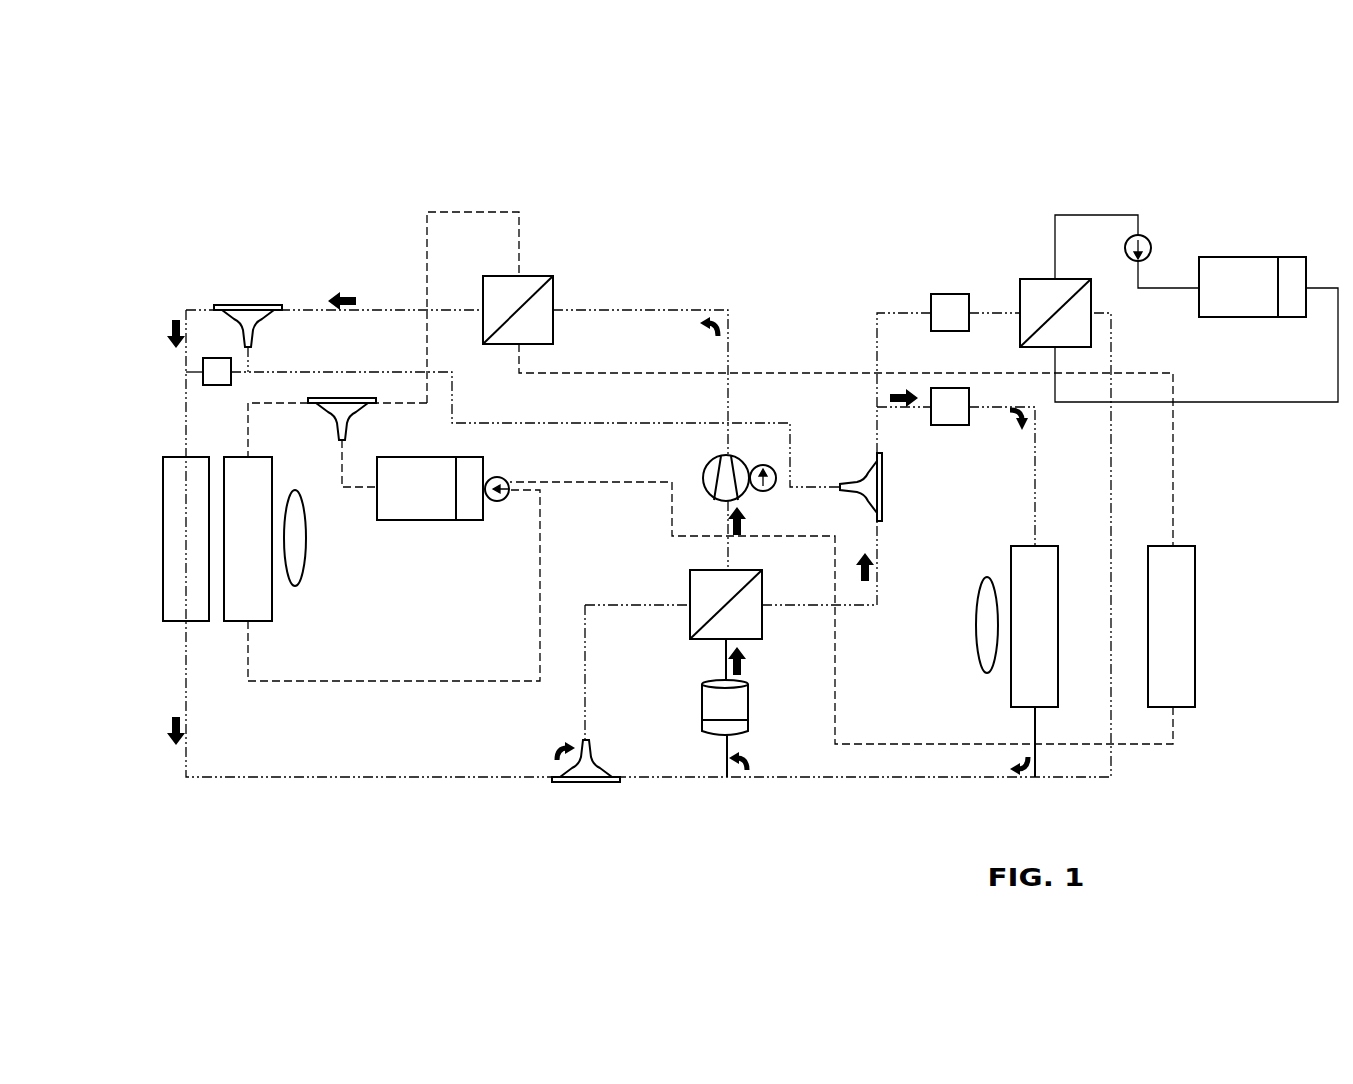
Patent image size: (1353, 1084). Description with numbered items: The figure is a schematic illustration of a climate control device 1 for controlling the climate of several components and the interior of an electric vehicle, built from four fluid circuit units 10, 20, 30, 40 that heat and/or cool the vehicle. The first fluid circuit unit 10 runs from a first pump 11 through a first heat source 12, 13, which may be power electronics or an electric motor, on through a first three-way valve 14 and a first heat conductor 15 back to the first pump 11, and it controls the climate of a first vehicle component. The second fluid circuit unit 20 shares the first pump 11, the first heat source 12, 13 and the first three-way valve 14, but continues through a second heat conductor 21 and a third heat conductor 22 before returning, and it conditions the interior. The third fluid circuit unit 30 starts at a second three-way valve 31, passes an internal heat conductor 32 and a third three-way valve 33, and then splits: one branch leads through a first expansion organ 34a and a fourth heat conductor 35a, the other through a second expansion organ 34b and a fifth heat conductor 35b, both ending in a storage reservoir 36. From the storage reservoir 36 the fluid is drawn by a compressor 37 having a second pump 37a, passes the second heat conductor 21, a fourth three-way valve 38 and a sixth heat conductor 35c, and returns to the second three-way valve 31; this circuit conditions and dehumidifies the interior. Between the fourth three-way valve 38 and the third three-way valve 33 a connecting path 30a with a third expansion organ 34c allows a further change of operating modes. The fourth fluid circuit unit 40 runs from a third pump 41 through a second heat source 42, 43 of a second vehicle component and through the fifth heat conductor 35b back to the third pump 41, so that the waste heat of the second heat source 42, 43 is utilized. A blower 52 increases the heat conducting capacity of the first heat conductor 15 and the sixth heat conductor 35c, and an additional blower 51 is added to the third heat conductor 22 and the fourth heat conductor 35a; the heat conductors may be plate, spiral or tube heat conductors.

The climate control device 1 is at (345, 190).
The first fluid circuit unit 10 is at (390, 681).
The first pump 11 is at (505, 503).
The first heat source 12 is at (468, 520).
The first heat source 13 is at (410, 520).
The first three-way valve 14 is at (342, 403).
The first heat conductor 15 is at (272, 600).
The second fluid circuit unit 20 is at (800, 372).
The second heat conductor 21 is at (540, 276).
The third heat conductor 22 is at (1195, 625).
The third fluid circuit unit 30 is at (437, 777).
The connecting path 30a is at (555, 425).
The second three-way valve 31 is at (587, 780).
The internal heat conductor 32 is at (690, 585).
The third three-way valve 33 is at (862, 460).
The first expansion organ 34a is at (950, 425).
The second expansion organ 34b is at (950, 294).
The third expansion organ 34c is at (213, 385).
The fourth heat conductor 35a is at (1011, 680).
The fifth heat conductor 35b is at (1040, 279).
The sixth heat conductor 35c is at (163, 545).
The storage reservoir 36 is at (702, 700).
The compressor 37 is at (715, 457).
The second pump 37a is at (763, 465).
The fourth three-way valve 38 is at (248, 310).
The fourth fluid circuit unit 40 is at (1277, 402).
The third pump 41 is at (1148, 240).
The second heat source 42 is at (1236, 257).
The second heat source 43 is at (1292, 257).
The additional blower 51 is at (978, 600).
The blower 52 is at (306, 553).